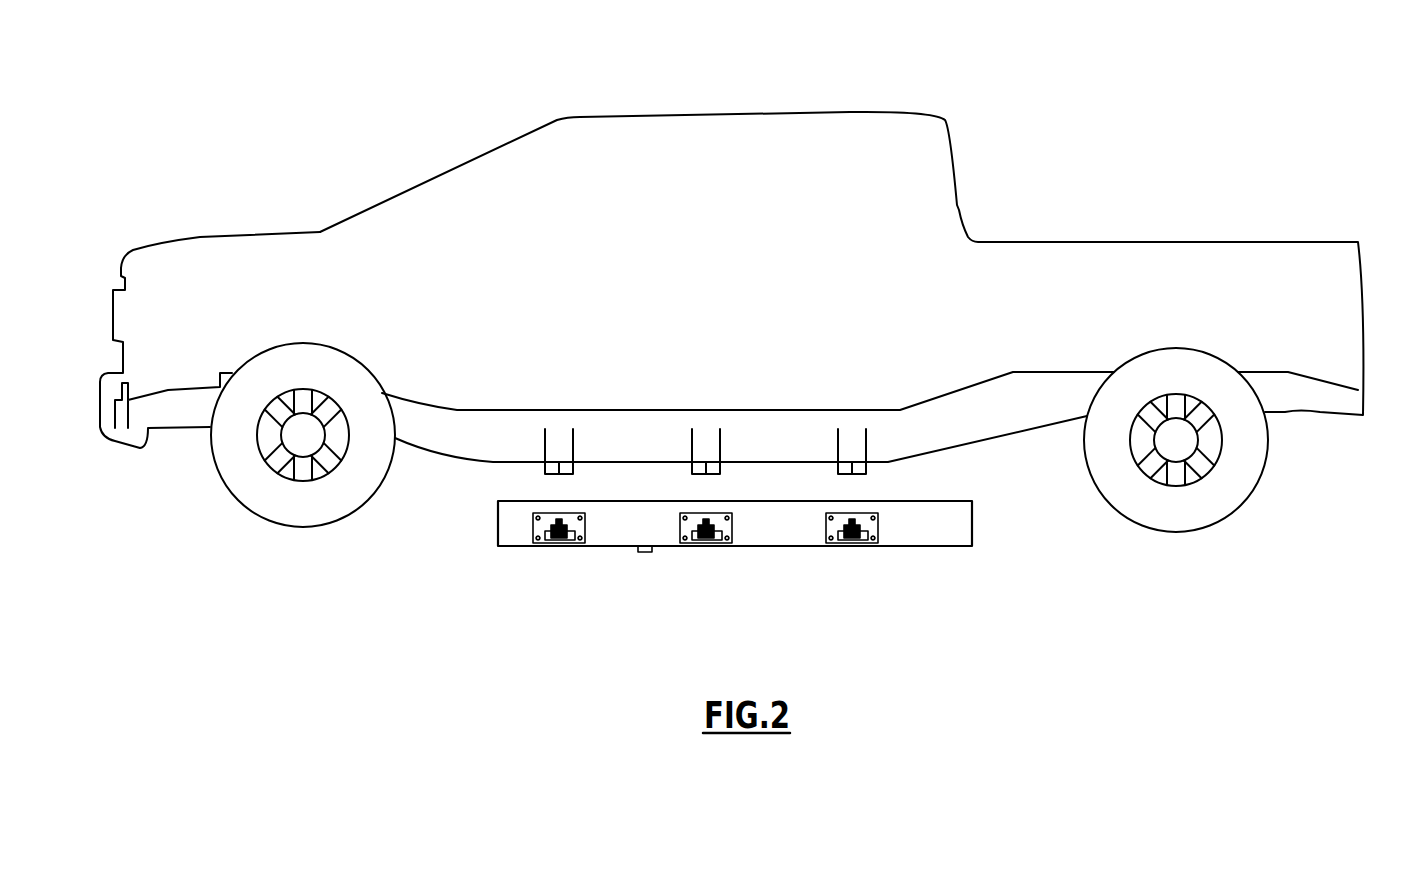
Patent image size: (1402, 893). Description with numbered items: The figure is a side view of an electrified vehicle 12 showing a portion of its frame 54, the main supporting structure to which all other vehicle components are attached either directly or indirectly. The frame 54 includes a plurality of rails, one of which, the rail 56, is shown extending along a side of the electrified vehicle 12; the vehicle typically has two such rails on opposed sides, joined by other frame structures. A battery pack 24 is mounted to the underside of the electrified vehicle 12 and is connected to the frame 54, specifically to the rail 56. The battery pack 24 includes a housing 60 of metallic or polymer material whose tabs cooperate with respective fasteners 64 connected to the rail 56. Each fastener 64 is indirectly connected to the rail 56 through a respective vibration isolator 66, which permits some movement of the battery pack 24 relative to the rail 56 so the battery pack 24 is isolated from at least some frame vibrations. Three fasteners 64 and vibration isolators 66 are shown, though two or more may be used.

The electrified vehicle 12 is at (1283, 124).
The battery pack 24 is at (647, 628).
The frame 54 is at (757, 398).
The rail 56 is at (791, 430).
The housing 60 is at (953, 548).
The fastener 64 is at (559, 553).
The vibration isolator 66 is at (596, 540).